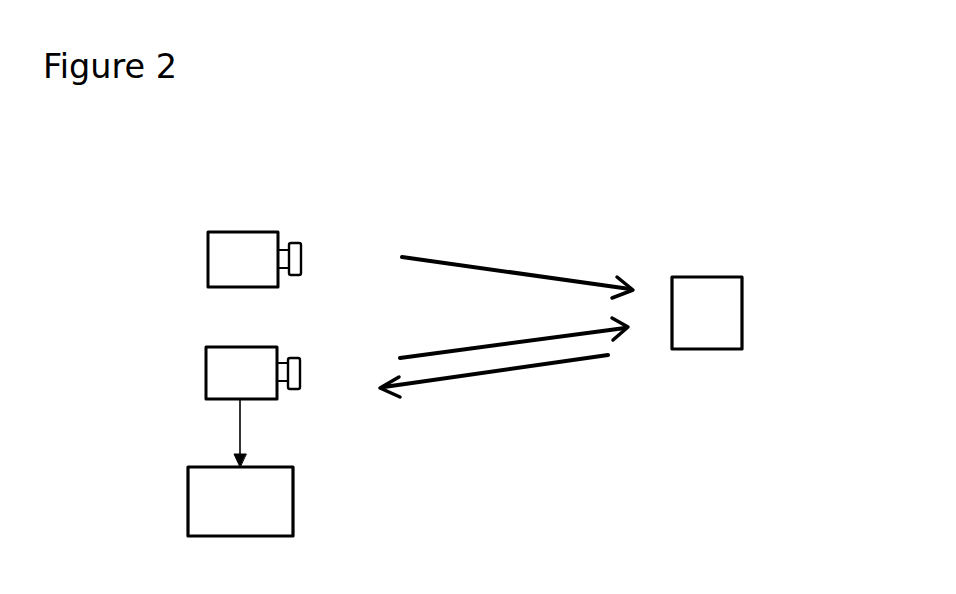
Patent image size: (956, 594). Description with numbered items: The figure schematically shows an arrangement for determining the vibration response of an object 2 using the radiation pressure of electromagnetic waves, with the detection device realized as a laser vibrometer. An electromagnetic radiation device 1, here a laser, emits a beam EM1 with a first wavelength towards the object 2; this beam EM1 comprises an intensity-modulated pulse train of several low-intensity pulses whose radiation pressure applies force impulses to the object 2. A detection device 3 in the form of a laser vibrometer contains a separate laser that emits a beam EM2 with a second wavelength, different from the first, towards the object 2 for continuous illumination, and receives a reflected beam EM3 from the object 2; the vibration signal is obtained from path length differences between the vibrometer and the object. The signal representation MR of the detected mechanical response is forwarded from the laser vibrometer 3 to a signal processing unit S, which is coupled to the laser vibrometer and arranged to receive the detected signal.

The device for emitting EM waves 1 is at (208, 250).
The detection device 3 is at (206, 365).
The object 2 is at (742, 300).
The signal processing unit S is at (188, 498).
The signal representation of the mechanical response MR is at (238, 440).
The beam with a first wavelength EM1 is at (496, 268).
The beam with a second wavelength EM2 is at (447, 350).
The reflected beam EM3 is at (542, 367).